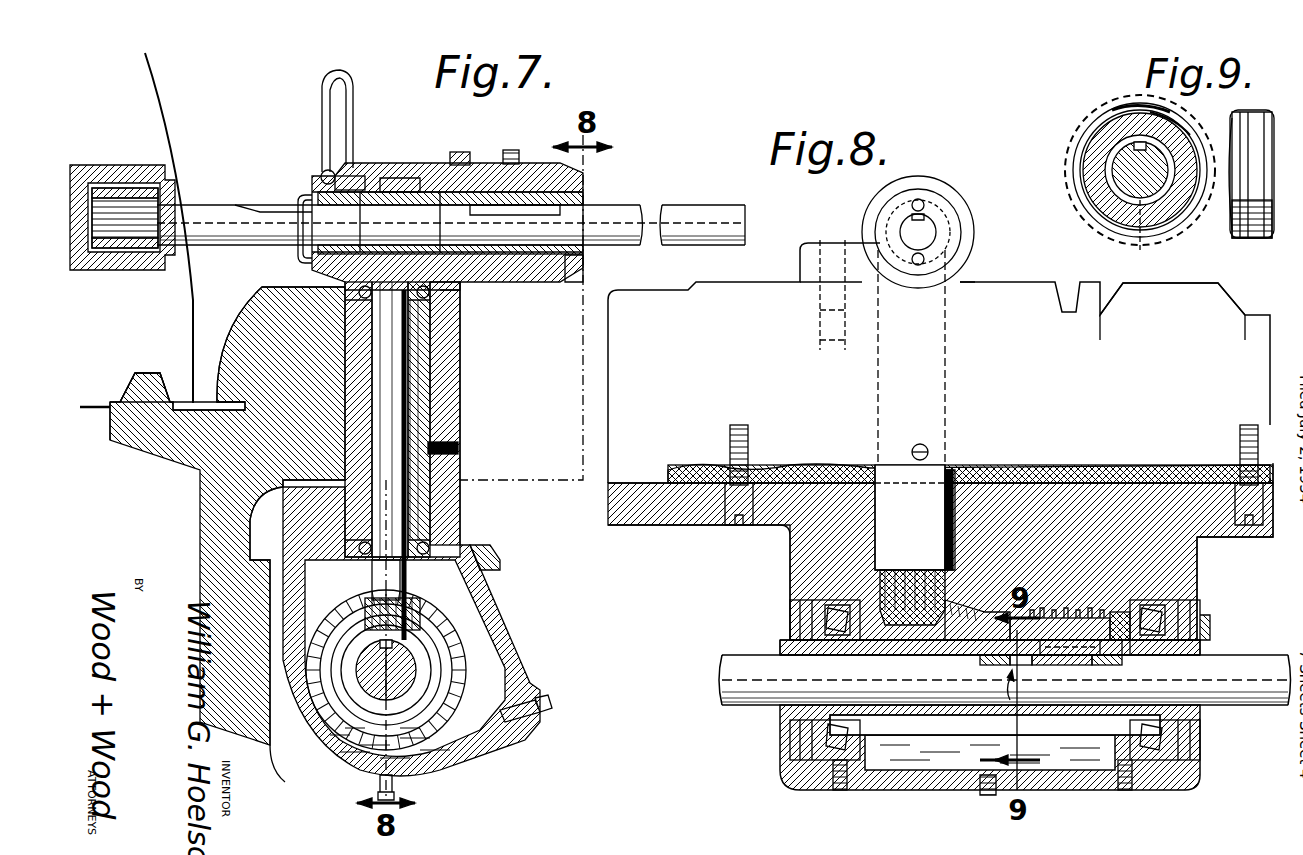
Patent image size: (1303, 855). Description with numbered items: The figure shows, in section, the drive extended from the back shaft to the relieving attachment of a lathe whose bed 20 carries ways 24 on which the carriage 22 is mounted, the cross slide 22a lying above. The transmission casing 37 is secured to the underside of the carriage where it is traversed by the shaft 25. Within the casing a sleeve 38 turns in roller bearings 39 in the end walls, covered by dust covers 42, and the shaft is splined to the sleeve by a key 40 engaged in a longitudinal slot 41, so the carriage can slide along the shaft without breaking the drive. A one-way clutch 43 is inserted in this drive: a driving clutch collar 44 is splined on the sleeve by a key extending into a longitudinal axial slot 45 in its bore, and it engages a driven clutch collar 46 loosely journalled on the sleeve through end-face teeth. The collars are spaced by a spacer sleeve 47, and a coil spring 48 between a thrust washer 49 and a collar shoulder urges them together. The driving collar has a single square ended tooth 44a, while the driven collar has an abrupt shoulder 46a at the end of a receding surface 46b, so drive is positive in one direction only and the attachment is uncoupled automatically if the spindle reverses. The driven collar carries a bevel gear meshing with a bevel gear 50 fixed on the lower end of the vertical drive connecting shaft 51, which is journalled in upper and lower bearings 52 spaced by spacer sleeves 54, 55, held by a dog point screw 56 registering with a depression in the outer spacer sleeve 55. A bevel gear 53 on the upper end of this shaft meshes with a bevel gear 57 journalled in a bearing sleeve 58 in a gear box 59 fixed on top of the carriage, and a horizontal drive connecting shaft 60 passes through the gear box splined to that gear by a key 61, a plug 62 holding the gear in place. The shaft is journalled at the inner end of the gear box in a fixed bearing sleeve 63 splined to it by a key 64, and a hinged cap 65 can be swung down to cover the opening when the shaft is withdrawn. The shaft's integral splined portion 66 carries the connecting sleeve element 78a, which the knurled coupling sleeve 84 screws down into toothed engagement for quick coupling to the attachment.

In FIG. 7, the bed 20 is at (249, 763).
In FIG. 7, the carriage 22 is at (268, 322).
In FIG. 8, the carriage 22 is at (1036, 292).
In FIG. 8, the cross slide 22a is at (1110, 305).
In FIG. 7, the ways 24 is at (272, 392).
In FIG. 7, the shaft 25 is at (420, 665).
In FIG. 8, the shaft 25 is at (1242, 668).
In FIG. 7, the transmission casing 37 is at (448, 512).
In FIG. 8, the transmission casing 37 is at (1190, 572).
In FIG. 7, the sleeve 38 is at (440, 668).
In FIG. 8, the sleeve 38 is at (1200, 642).
In FIG. 8, the roller bearings 39 is at (838, 770).
In FIG. 8, the key 40 is at (1062, 648).
In FIG. 7, the longitudinal slot 41 is at (378, 640).
In FIG. 8, the longitudinal slot 41 is at (1126, 660).
In FIG. 8, the dust covers 42 is at (792, 618).
In FIG. 8, the clutch 43 is at (1048, 625).
In FIG. 9, the clutch 43 is at (1150, 230).
In FIG. 8, the driving clutch collar 44 is at (1093, 628).
In FIG. 9, the driving clutch collar 44 is at (1105, 190).
In FIG. 8, the square ended tooth 44a is at (1022, 665).
In FIG. 9, the square ended tooth 44a is at (1120, 112).
In FIG. 8, the longitudinal axial slot 45 is at (1060, 665).
In FIG. 7, the driven clutch collar 46 is at (425, 640).
In FIG. 8, the driven clutch collar 46 is at (972, 618).
In FIG. 9, the driven clutch collar 46 is at (1085, 128).
In FIG. 9, the abrupt shoulder 46a is at (1195, 130).
In FIG. 9, the receding surface 46b is at (1248, 242).
In FIG. 8, the spacer sleeve 47 is at (995, 665).
In FIG. 8, the coil spring 48 is at (1105, 665).
In FIG. 8, the thrust washer 49 is at (1148, 650).
In FIG. 7, the bevel gear 50 is at (418, 610).
In FIG. 8, the bevel gear 50 is at (938, 615).
In FIG. 7, the vertical drive connecting shaft 51 is at (430, 480).
In FIG. 7, the bearings 52 is at (448, 318).
In FIG. 8, the bearings 52 is at (903, 545).
In FIG. 7, the bevel gear 53 is at (448, 292).
In FIG. 7, the spacer sleeve 54 is at (428, 358).
In FIG. 7, the outer spacer sleeve 55 is at (428, 390).
In FIG. 8, the outer spacer sleeve 55 is at (928, 452).
In FIG. 7, the dog point screw 56 is at (460, 450).
In FIG. 8, the dog point screw 56 is at (918, 445).
In FIG. 7, the bevel gear 57 is at (440, 165).
In FIG. 7, the bearing sleeve 58 is at (500, 163).
In FIG. 7, the gear box 59 is at (393, 168).
In FIG. 8, the gear box 59 is at (975, 220).
In FIG. 7, the horizontal drive connecting shaft 60 is at (207, 215).
In FIG. 8, the horizontal drive connecting shaft 60 is at (926, 250).
In FIG. 7, the key 61 is at (585, 200).
In FIG. 7, the plug 62 is at (586, 272).
In FIG. 8, the plug 62 is at (940, 285).
In FIG. 7, the fixed bearing sleeve 63 is at (370, 178).
In FIG. 7, the key 64 is at (310, 200).
In FIG. 7, the hinged cap 65 is at (350, 118).
In FIG. 7, the splined portion 66 is at (135, 205).
In FIG. 7, the sleeve element 78a is at (138, 250).
In FIG. 7, the coupling sleeve 84 is at (113, 170).